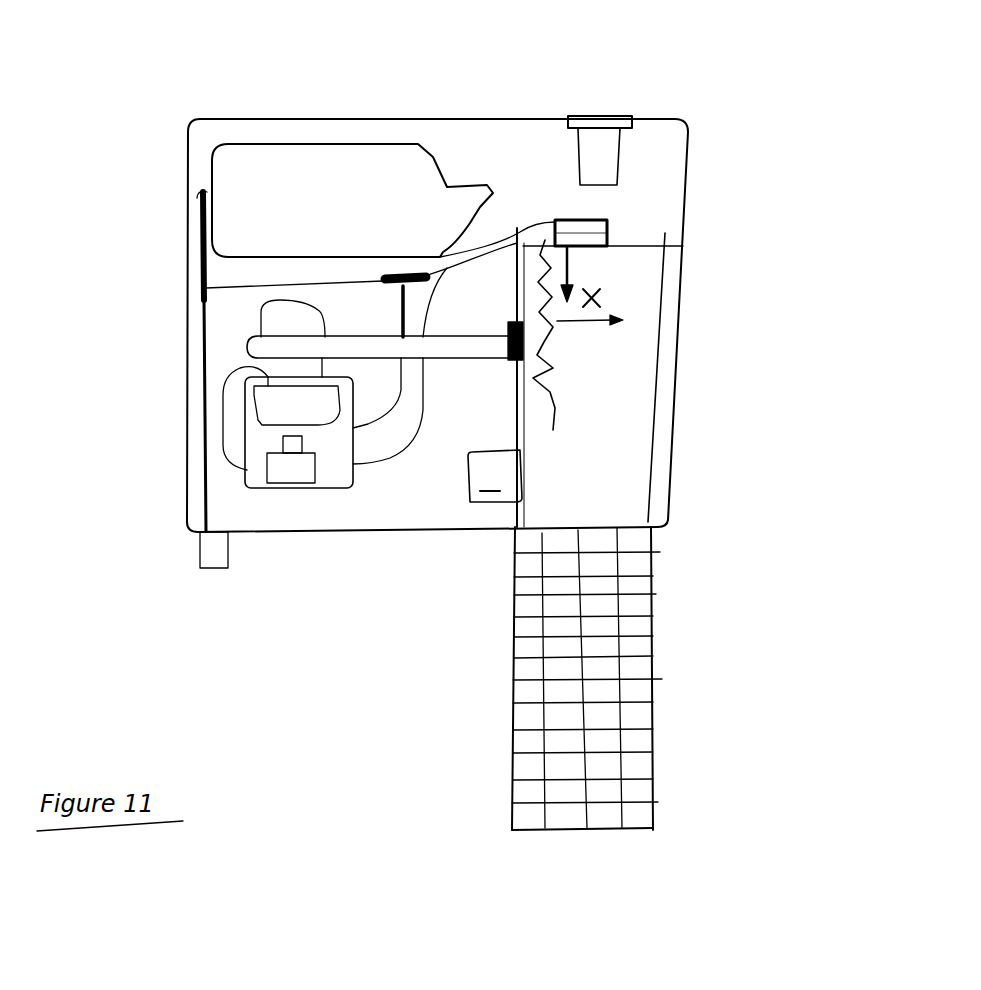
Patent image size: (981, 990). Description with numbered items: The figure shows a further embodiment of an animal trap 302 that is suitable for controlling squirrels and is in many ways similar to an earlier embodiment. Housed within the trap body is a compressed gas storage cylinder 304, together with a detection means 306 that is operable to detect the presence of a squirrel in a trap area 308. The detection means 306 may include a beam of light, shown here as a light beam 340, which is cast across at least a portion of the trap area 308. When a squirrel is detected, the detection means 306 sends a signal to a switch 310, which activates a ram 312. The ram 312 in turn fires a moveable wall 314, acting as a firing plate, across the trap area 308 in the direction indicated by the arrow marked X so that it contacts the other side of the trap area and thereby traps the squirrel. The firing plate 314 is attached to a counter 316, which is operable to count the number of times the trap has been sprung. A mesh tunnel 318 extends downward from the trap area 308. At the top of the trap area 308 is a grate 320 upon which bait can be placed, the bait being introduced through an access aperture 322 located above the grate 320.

The animal trap 302 is at (787, 190).
The compressed gas storage cylinder 304 is at (352, 200).
The detection means 306 is at (613, 222).
The trap area 308 is at (605, 363).
The switch 310 is at (329, 450).
The ram 312 is at (385, 341).
The moveable wall 314 is at (562, 348).
The counter 316 is at (522, 420).
The mesh tunnel 318 is at (639, 678).
The grate 320 is at (657, 253).
The access aperture 322 is at (595, 135).
The light beam 340 is at (568, 255).